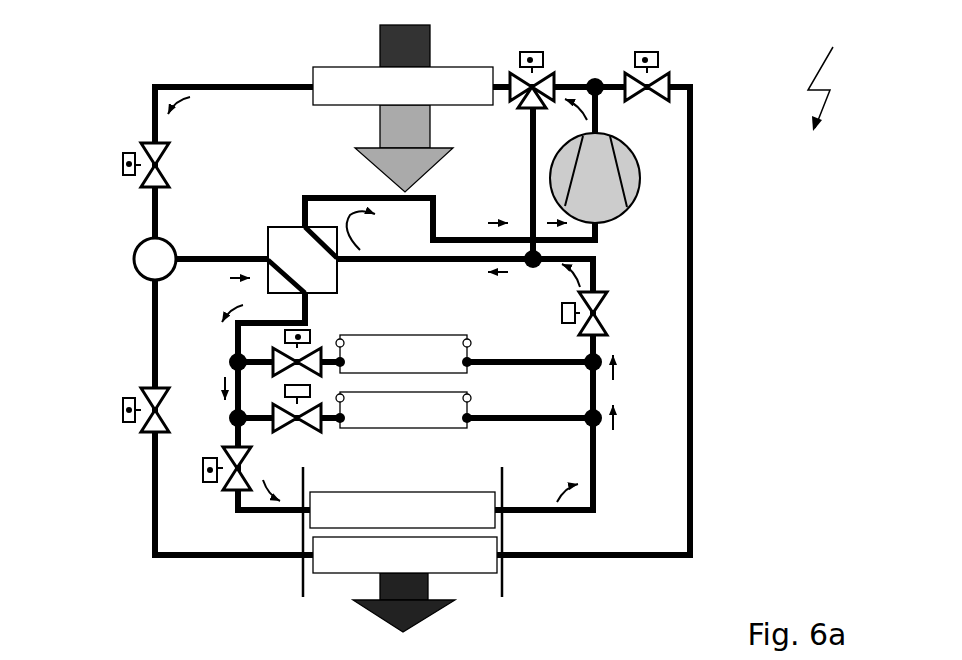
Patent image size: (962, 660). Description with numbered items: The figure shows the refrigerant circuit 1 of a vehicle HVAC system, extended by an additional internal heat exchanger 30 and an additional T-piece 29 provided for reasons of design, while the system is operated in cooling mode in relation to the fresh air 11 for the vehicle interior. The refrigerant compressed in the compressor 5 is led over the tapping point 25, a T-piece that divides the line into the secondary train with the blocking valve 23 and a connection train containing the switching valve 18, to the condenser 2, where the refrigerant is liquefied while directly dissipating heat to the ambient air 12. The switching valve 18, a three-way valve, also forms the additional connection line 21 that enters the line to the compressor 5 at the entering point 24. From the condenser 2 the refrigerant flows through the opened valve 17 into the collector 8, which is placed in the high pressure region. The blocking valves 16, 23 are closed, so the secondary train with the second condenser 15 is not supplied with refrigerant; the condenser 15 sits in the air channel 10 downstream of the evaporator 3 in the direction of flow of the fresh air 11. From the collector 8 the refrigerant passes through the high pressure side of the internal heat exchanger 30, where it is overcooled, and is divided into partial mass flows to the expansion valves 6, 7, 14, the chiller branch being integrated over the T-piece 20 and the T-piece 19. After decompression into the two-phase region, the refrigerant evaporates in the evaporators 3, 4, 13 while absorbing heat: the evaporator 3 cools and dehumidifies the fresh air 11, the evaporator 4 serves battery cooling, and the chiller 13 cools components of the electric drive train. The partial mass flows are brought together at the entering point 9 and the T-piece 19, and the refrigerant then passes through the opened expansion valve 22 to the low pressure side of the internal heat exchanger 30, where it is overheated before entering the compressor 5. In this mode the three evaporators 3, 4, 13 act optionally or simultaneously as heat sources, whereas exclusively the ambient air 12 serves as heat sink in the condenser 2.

The refrigerant circuit 1 is at (827, 73).
The condenser 2 is at (325, 80).
The evaporator 3 is at (432, 508).
The evaporator 4 is at (415, 350).
The compressor 5 is at (627, 178).
The first expansion valve 6 is at (207, 478).
The expansion valve 7 is at (310, 330).
The collector 8 is at (145, 260).
The entering point 9 is at (585, 364).
The air channel 10 is at (462, 585).
The fresh air 11 is at (363, 605).
The ambient air 12 is at (412, 52).
The evaporator 13 is at (390, 413).
The expansion valve 14 is at (297, 408).
The heat exchanger 15 is at (332, 555).
The control valve 16 is at (124, 398).
The valve 17 is at (124, 154).
The switching valve 18 is at (537, 52).
The T-piece 19 is at (600, 425).
The T-piece 20 is at (230, 357).
The connection line 21 is at (533, 162).
The expansion valve 22 is at (597, 312).
The blocking valve 23 is at (657, 53).
The entering point 24 is at (531, 268).
The tapping point 25 is at (597, 80).
The T-piece 29 is at (230, 412).
The internal heat exchanger 30 is at (297, 250).